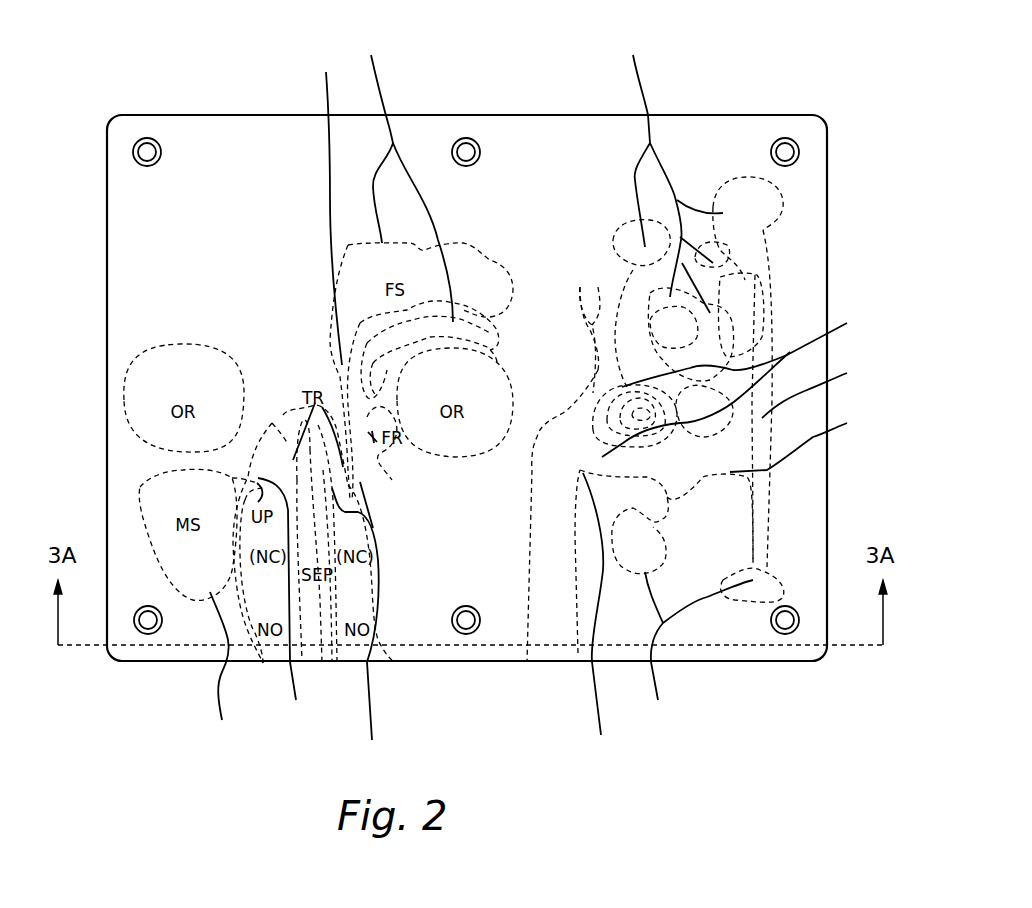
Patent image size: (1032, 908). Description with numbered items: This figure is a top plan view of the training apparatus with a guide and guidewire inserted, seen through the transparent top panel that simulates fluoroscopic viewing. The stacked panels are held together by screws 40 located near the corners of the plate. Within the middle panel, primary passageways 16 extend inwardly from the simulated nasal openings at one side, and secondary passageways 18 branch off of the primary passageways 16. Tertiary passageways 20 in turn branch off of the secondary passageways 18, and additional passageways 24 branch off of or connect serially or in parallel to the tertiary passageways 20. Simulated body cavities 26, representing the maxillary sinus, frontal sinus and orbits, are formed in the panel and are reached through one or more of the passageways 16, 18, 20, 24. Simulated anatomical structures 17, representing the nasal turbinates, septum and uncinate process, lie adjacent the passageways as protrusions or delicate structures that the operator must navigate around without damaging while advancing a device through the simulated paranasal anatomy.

The primary passageways 16 is at (454, 420).
The simulated anatomical structures 17 is at (437, 619).
The secondary passageways 18 is at (606, 540).
The tertiary passageways 20 is at (595, 308).
The additional passageways 24 is at (816, 419).
The simulated body cavities 26 is at (481, 389).
The screws 40 is at (467, 389).